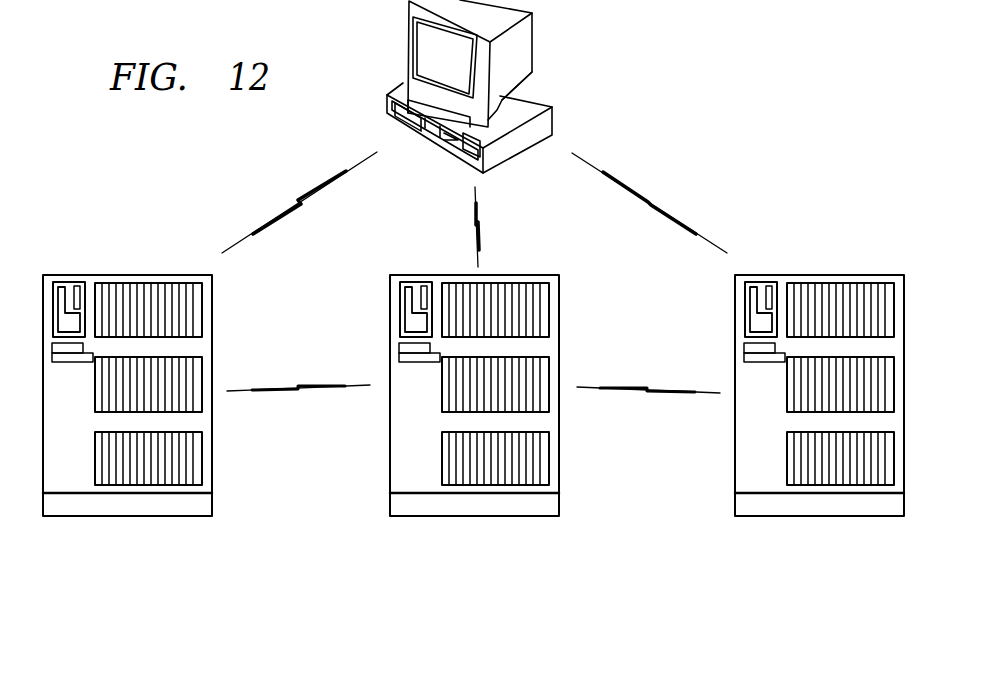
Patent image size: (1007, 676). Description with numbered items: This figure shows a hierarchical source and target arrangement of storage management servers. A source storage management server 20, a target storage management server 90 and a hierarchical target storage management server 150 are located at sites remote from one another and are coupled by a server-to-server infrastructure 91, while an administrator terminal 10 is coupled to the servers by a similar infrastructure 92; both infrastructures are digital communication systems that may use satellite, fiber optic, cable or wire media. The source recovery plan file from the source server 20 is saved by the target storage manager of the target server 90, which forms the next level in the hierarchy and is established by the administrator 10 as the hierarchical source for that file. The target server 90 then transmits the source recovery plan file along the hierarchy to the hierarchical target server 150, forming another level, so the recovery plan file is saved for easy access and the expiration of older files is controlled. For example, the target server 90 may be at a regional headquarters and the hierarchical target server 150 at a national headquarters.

The administrator terminal 10 is at (580, 59).
The source storage management server 20 is at (136, 246).
The target storage management server 90 is at (603, 448).
The server-to-server infrastructure 91 is at (310, 386).
The infrastructure 92 is at (320, 190).
The hierarchical target storage management server 150 is at (803, 244).